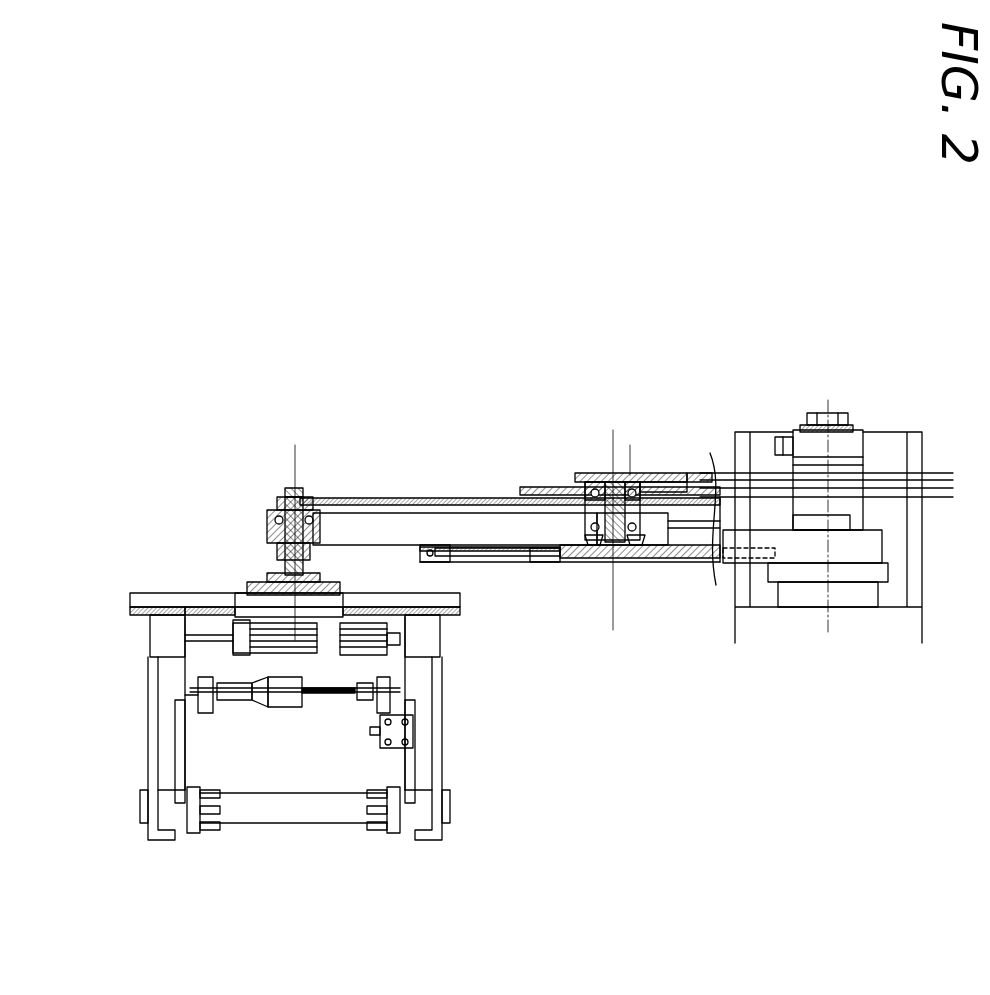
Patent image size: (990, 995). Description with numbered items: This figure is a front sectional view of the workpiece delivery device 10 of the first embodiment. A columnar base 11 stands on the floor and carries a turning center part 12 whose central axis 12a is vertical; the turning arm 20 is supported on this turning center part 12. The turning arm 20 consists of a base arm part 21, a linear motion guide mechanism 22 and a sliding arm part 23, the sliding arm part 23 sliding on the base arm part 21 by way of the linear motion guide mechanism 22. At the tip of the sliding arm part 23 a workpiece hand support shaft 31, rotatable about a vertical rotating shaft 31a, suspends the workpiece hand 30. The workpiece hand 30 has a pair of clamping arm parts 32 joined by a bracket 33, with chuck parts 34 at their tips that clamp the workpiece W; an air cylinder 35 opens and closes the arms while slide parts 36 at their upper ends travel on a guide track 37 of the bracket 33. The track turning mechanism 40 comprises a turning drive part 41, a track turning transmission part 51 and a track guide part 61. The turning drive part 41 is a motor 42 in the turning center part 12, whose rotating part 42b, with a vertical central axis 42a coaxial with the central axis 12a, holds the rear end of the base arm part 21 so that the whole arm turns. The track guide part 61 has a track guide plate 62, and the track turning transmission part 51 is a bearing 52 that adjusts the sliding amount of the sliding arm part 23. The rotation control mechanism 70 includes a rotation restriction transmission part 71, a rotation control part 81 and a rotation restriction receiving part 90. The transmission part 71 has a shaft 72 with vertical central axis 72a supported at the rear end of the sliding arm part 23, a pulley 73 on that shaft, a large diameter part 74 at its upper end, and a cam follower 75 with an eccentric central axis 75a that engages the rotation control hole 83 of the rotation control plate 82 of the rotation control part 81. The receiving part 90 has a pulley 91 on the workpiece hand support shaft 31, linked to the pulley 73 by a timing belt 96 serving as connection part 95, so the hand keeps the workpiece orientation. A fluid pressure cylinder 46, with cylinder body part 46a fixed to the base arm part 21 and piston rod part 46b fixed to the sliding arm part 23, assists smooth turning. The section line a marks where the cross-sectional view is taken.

The workpiece delivery device 10 is at (876, 375).
The columnar base 11 is at (915, 616).
The turning center part 12 is at (822, 590).
The central axis of the turning center part 12a is at (830, 625).
The turning arm 20 is at (478, 578).
The base arm part 21 is at (677, 567).
The linear motion guide mechanism 22 is at (553, 560).
The sliding arm part 23 is at (376, 546).
The workpiece hand 30 is at (190, 575).
The workpiece hand support shaft 31 is at (268, 522).
The vertical rotating shaft 31a is at (293, 473).
The clamping arm parts 32 is at (163, 740).
The bracket 33 is at (160, 594).
The chuck parts 34 is at (203, 820).
The air cylinder 35 is at (307, 653).
The slide parts 36 is at (158, 623).
The guide track 37 is at (140, 612).
The track turning mechanism 40 is at (655, 297).
The turning drive part 41 is at (802, 417).
The motor 42 is at (800, 432).
The motor central axis 42a is at (828, 410).
The rotating part 42b is at (888, 571).
The fluid pressure cylinder 46 is at (644, 573).
The cylinder body part 46a is at (716, 585).
The piston rod part 46b is at (520, 560).
The track turning transmission part 51 is at (688, 472).
The bearing 52 is at (675, 408).
The track guide part 61 is at (698, 472).
The track guide plate 62 is at (727, 470).
The rotation control mechanism 70 is at (580, 312).
The rotation restriction transmission part 71 is at (520, 357).
The shaft 72 is at (597, 530).
The central axis of the shaft 72a is at (615, 605).
The pulley 73 is at (600, 518).
The large diameter part 74 is at (602, 505).
The cam follower 75 is at (593, 492).
The central axis of the cam follower 75a is at (636, 478).
The rotation control part 81 is at (627, 397).
The rotation control plate 82 is at (648, 480).
The rotation control hole 83 is at (613, 480).
The rotation restriction receiving part 90 is at (300, 458).
The pulley 91 is at (327, 417).
The connection part 95 is at (417, 497).
The timing belt 96 is at (510, 484).
The workpiece W is at (270, 823).
The line a- a is at (628, 455).